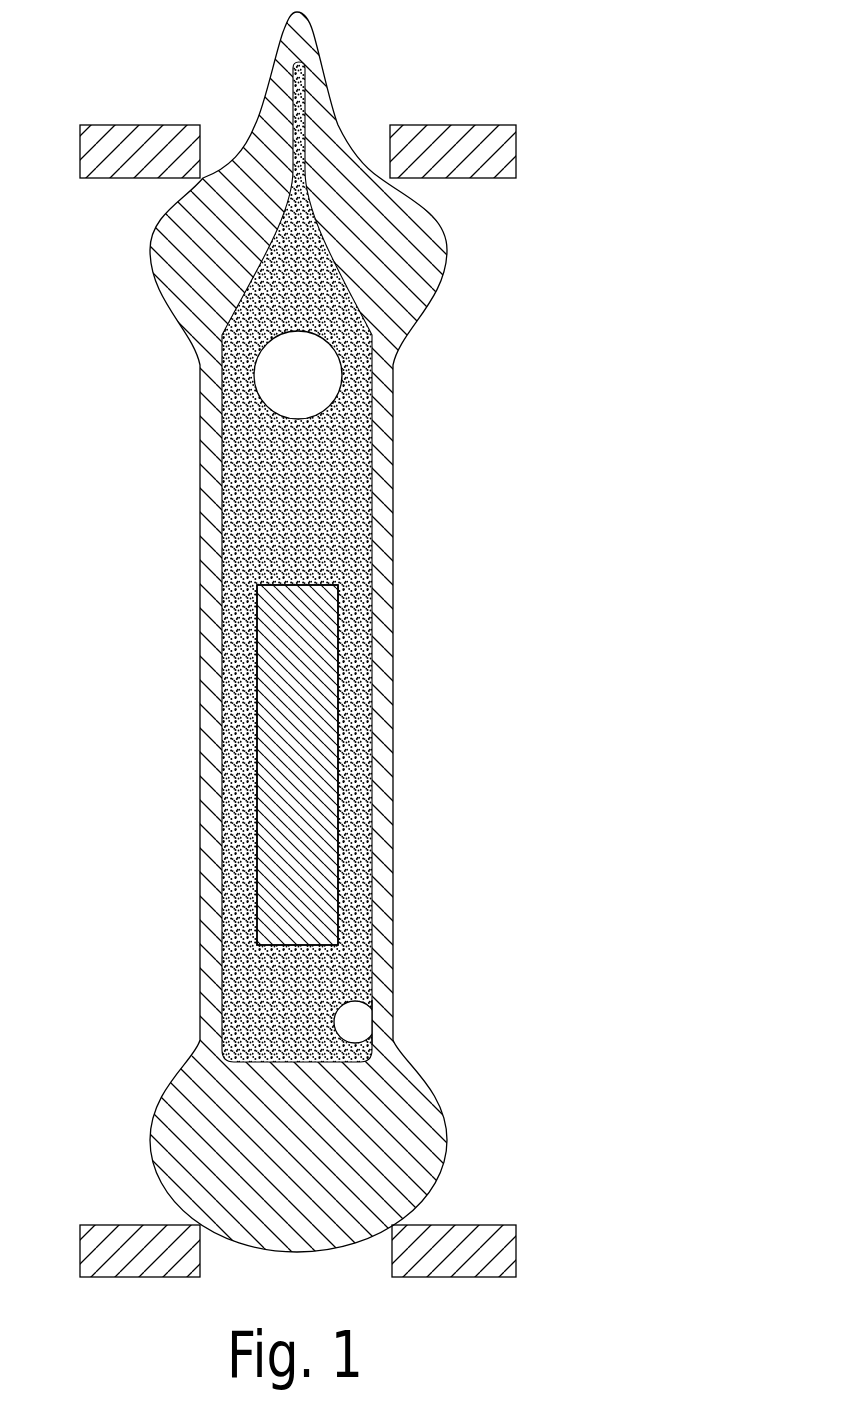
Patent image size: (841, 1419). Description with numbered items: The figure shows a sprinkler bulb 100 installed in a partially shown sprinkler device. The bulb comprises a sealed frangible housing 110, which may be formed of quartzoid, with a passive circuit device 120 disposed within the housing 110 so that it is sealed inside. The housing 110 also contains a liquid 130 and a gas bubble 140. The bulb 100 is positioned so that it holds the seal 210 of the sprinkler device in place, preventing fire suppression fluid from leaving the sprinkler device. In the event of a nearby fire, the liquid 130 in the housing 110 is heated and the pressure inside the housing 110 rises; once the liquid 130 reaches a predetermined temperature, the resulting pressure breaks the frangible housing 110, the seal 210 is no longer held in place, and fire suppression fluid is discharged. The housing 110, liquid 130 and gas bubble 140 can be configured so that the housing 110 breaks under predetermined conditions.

The sprinkler bulb 100 is at (375, 632).
The sealed frangible housing 110 is at (187, 292).
The passive circuit device 120 is at (247, 770).
The liquid 130 is at (247, 968).
The gas bubble 140 is at (300, 388).
The seal 210 is at (455, 128).